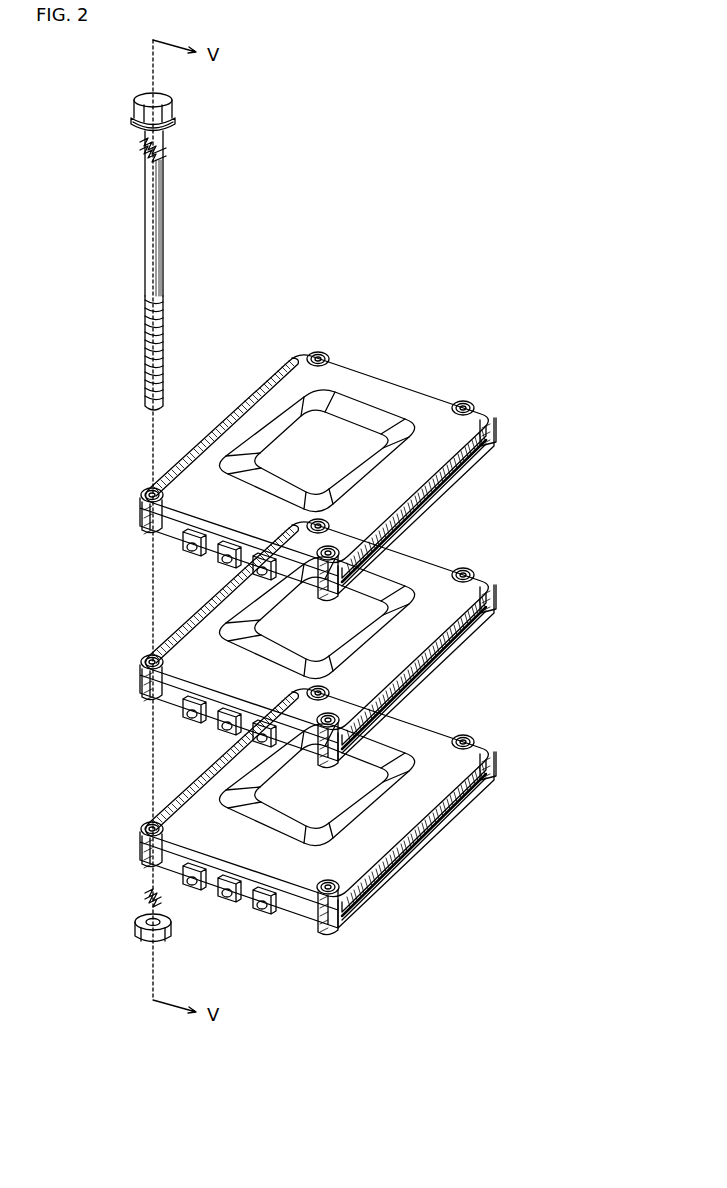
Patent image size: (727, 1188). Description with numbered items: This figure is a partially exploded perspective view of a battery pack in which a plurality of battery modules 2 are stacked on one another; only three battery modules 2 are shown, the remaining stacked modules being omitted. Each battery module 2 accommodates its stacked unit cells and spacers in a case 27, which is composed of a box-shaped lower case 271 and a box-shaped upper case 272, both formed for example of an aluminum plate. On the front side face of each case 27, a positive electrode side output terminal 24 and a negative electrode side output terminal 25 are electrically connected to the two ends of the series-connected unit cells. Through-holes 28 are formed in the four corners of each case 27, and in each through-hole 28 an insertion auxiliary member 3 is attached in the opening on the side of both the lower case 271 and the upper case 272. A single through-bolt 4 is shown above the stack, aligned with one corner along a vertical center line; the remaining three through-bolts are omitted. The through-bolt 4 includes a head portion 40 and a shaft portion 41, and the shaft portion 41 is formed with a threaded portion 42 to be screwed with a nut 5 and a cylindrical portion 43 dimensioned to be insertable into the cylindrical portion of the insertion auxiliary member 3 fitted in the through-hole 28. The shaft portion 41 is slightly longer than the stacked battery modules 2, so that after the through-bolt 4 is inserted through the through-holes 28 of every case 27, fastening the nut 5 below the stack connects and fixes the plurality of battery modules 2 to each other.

The battery module 2 is at (494, 413).
The insertion auxiliary member 3 is at (316, 356).
The through-bolt 4 is at (218, 251).
The nut 5 is at (171, 926).
The positive electrode side output terminal 24 is at (258, 567).
The negative electrode side output terminal 25 is at (188, 545).
The case 27 is at (392, 639).
The through-hole 28 is at (300, 354).
The head portion 40 is at (174, 110).
The shaft portion 41 is at (207, 270).
The threaded portion 42 is at (168, 296).
The cylindrical portion 43 is at (160, 162).
The lower case 271 is at (458, 484).
The upper case 272 is at (486, 430).